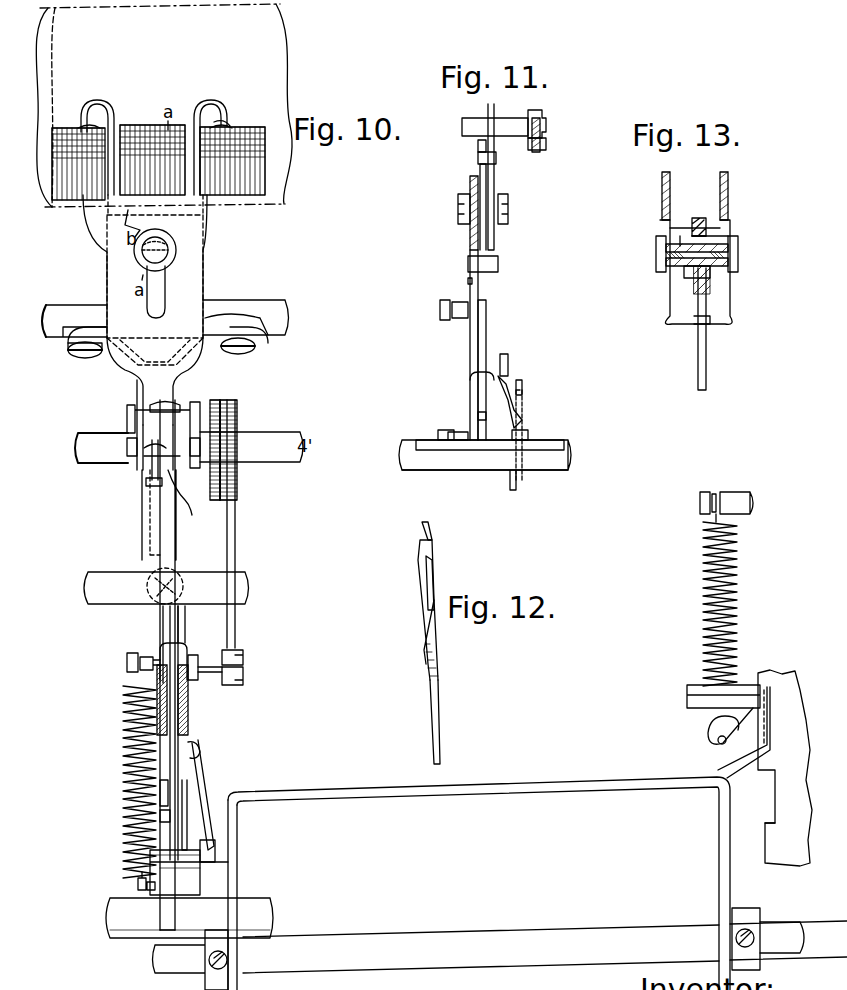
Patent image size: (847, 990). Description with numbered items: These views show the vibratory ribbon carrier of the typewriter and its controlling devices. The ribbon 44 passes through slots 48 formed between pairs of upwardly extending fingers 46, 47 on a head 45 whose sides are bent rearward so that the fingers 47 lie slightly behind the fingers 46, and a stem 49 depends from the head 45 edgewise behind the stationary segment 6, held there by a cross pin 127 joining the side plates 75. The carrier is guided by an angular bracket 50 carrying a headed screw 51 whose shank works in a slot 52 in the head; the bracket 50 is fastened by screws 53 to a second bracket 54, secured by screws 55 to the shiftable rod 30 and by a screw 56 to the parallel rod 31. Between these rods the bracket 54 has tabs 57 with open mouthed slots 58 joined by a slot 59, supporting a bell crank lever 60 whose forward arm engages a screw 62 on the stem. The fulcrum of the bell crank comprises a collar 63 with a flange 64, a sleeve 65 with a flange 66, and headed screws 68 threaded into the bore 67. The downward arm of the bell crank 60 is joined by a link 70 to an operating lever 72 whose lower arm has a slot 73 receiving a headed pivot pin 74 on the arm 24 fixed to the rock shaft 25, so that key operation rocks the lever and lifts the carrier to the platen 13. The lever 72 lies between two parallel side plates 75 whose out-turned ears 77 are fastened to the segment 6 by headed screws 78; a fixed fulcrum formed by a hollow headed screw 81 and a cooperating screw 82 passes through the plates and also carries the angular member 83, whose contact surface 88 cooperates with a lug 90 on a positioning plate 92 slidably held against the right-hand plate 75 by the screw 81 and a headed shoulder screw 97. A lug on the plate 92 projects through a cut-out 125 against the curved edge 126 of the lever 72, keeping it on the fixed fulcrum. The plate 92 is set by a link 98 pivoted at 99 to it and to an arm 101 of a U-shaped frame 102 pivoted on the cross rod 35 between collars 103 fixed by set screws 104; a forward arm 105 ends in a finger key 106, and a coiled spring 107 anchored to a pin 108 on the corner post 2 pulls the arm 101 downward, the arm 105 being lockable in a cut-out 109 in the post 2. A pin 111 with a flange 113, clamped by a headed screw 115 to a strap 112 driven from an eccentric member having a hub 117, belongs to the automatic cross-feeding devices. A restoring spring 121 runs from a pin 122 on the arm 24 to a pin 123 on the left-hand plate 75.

In FIG. 10, the corner post 2 is at (788, 680).
In FIG. 11, the stationary segment 6 is at (487, 470).
In FIG. 10, the cylindrical platen 13 is at (288, 40).
In FIG. 10, the arm 24 is at (186, 838).
In FIG. 10, the rock shaft 25 is at (268, 900).
In FIG. 10, the shiftable rod 30 is at (64, 312).
In FIG. 10, the rod 31 is at (247, 590).
In FIG. 10, the cross rod 35 is at (424, 940).
In FIG. 10, the ribbon 44 is at (138, 130).
In FIG. 10, the head 45 is at (207, 260).
In FIG. 12, the head 45 is at (438, 641).
In FIG. 10, the fingers 46 is at (102, 110).
In FIG. 12, the fingers 46 is at (432, 528).
In FIG. 10, the fingers 47 is at (86, 128).
In FIG. 12, the fingers 47 is at (422, 568).
In FIG. 10, the slot 48 is at (216, 120).
In FIG. 12, the slot 48 is at (434, 584).
In FIG. 10, the stem 49 is at (155, 389).
In FIG. 12, the stem 49 is at (440, 728).
In FIG. 10, the angular bracket 50 is at (205, 288).
In FIG. 10, the headed screw 51 is at (164, 240).
In FIG. 10, the slot 52 is at (150, 300).
In FIG. 10, the screws 53 is at (165, 352).
In FIG. 10, the second angular bracket 54 is at (222, 330).
In FIG. 10, the screws 55 is at (85, 358).
In FIG. 10, the screw 56 is at (147, 586).
In FIG. 10, the tabs 57 is at (127, 414).
In FIG. 13, the tabs 57 is at (662, 184).
In FIG. 10, the open mouthed slots 58 is at (128, 445).
In FIG. 13, the open mouthed slots 58 is at (664, 226).
In FIG. 10, the slot 59 is at (185, 505).
In FIG. 13, the slot 59 is at (708, 318).
In FIG. 10, the bell crank lever 60 is at (152, 470).
In FIG. 13, the bell crank lever 60 is at (694, 216).
In FIG. 10, the screw 62 is at (146, 486).
In FIG. 13, the collar 63 is at (710, 246).
In FIG. 13, the flange 64 is at (700, 222).
In FIG. 13, the sleeve 65 is at (680, 236).
In FIG. 13, the flange 66 is at (690, 274).
In FIG. 13, the bore 67 is at (710, 272).
In FIG. 10, the headed screws 68 is at (130, 460).
In FIG. 13, the headed screws 68 is at (656, 244).
In FIG. 10, the link 70 is at (148, 518).
In FIG. 10, the operating lever 72 is at (163, 622).
In FIG. 11, the operating lever 72 is at (470, 190).
In FIG. 10, the open mouthed slot 73 is at (158, 818).
In FIG. 10, the headed pivot pin 74 is at (160, 796).
In FIG. 10, the side plates 75 is at (156, 704).
In FIG. 11, the side plates 75 is at (478, 402).
In FIG. 11, the out-turned ears 77 is at (452, 440).
In FIG. 11, the headed screws 78 is at (438, 436).
In FIG. 11, the hollow headed screw 81 is at (508, 204).
In FIG. 11, the headed screw 82 is at (458, 204).
In FIG. 11, the angular member 83 is at (480, 172).
In FIG. 11, the contact surface 88 is at (478, 146).
In FIG. 10, the lug 90 is at (164, 634).
In FIG. 11, the lug 90 is at (496, 158).
In FIG. 10, the positioning plate 92 is at (186, 614).
In FIG. 11, the positioning plate 92 is at (488, 106).
In FIG. 10, the headed shoulder screw 97 is at (196, 656).
In FIG. 11, the headed shoulder screw 97 is at (508, 362).
In FIG. 10, the link 98 is at (200, 790).
In FIG. 11, the link 98 is at (510, 390).
In FIG. 10, the pivot 99 is at (200, 750).
In FIG. 10, the arm 101 is at (222, 845).
In FIG. 11, the arm 101 is at (526, 416).
In FIG. 10, the U-shaped frame 102 is at (302, 795).
In FIG. 10, the collars 103 is at (205, 964).
In FIG. 10, the set screws 104 is at (228, 958).
In FIG. 10, the arm 105 is at (740, 750).
In FIG. 10, the finger key 106 is at (687, 694).
In FIG. 10, the coiled spring 107 is at (730, 588).
In FIG. 10, the pin 108 is at (738, 498).
In FIG. 10, the cut-out 109 is at (775, 810).
In FIG. 10, the pin 111 is at (206, 674).
In FIG. 11, the pin 111 is at (508, 122).
In FIG. 10, the strap 112 is at (238, 554).
In FIG. 11, the strap 112 is at (540, 150).
In FIG. 10, the flange 113 is at (234, 658).
In FIG. 11, the flange 113 is at (538, 108).
In FIG. 10, the headed screw 115 is at (243, 678).
In FIG. 11, the headed screw 115 is at (546, 116).
In FIG. 10, the hub 117 is at (214, 425).
In FIG. 10, the coiled spring 121 is at (130, 766).
In FIG. 10, the pin 122 is at (138, 884).
In FIG. 10, the pin 123 is at (127, 662).
In FIG. 11, the pin 123 is at (440, 312).
In FIG. 11, the cut-out 125 is at (468, 282).
In FIG. 11, the curved edge 126 is at (468, 266).
In FIG. 11, the cross pin 127 is at (478, 418).